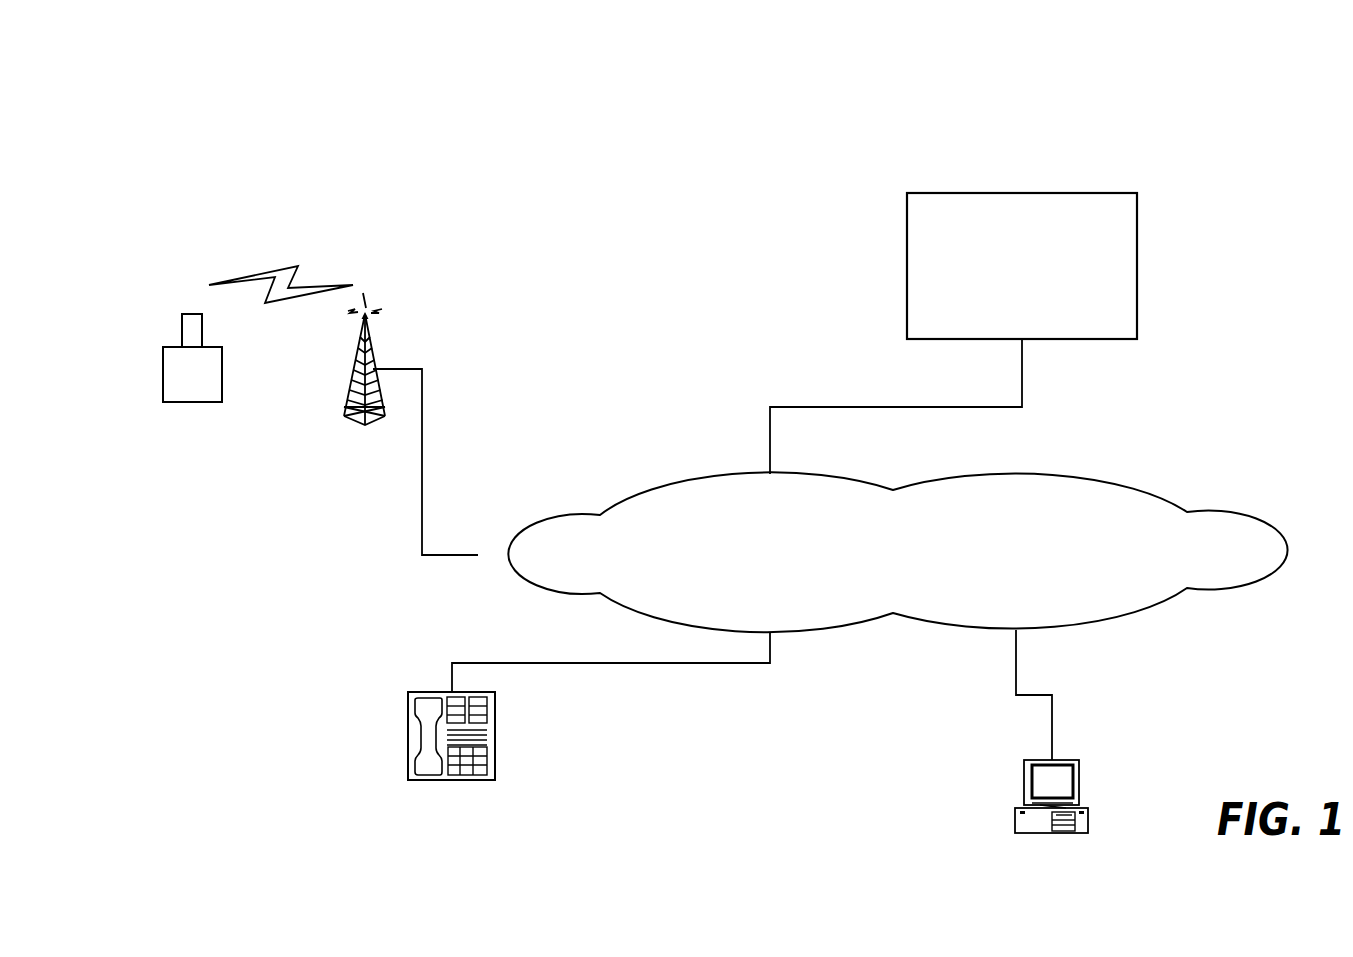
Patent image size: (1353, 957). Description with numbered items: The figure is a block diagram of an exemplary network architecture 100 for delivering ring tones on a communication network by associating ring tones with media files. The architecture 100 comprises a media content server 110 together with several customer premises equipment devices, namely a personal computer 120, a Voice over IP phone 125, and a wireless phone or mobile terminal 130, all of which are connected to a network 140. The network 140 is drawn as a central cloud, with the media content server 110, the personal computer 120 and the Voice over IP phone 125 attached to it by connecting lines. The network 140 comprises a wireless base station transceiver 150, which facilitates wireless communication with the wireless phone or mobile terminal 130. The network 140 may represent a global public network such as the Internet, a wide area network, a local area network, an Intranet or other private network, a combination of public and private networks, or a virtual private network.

The network architecture 100 is at (358, 156).
The media content server 110 is at (1047, 312).
The personal computer 120 is at (991, 788).
The Voice over IP phone 125 is at (391, 722).
The wireless phone or mobile terminal 130 is at (198, 334).
The network 140 is at (918, 581).
The wireless base station transceiver 150 is at (416, 332).